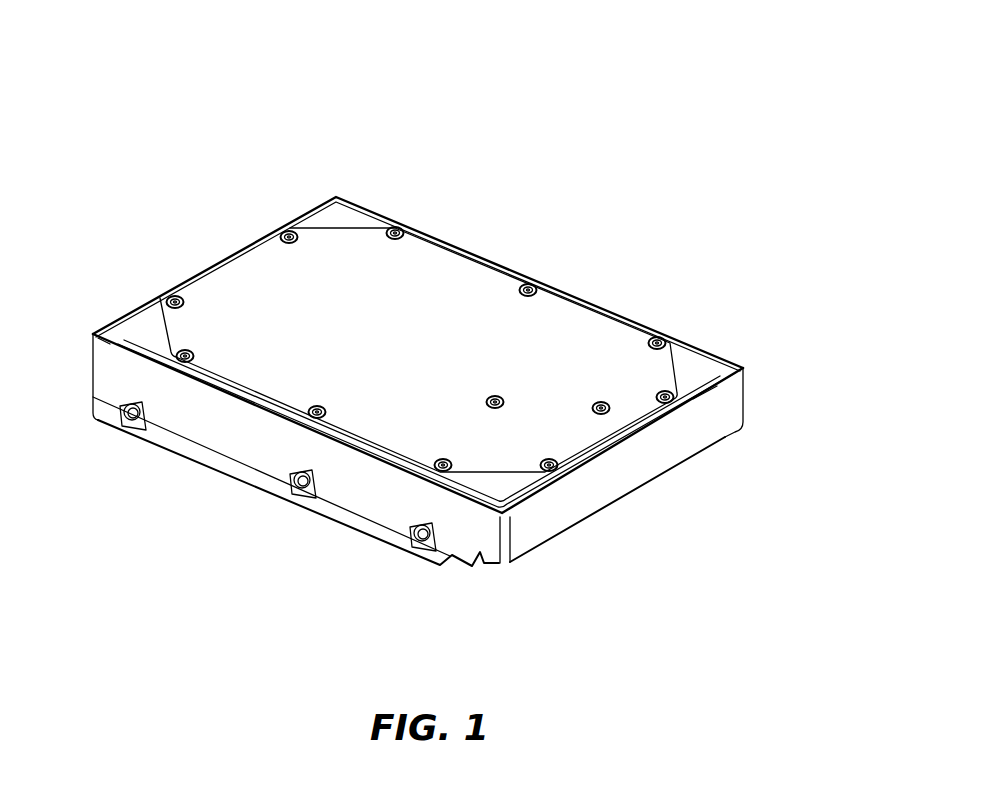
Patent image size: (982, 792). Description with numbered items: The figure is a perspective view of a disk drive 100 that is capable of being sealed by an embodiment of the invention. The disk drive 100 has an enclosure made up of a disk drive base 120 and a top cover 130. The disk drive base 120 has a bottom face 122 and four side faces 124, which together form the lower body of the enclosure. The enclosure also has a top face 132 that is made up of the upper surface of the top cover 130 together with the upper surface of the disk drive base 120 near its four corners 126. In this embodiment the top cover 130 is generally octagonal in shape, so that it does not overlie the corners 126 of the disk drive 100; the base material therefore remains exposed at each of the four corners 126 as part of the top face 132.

The disk drive 100 is at (522, 114).
The disk drive base 120 is at (203, 437).
The bottom face 122 is at (331, 518).
The side faces 124 is at (248, 238).
The corners 126 is at (93, 333).
The top cover 130 is at (402, 326).
The top face 132 is at (155, 300).